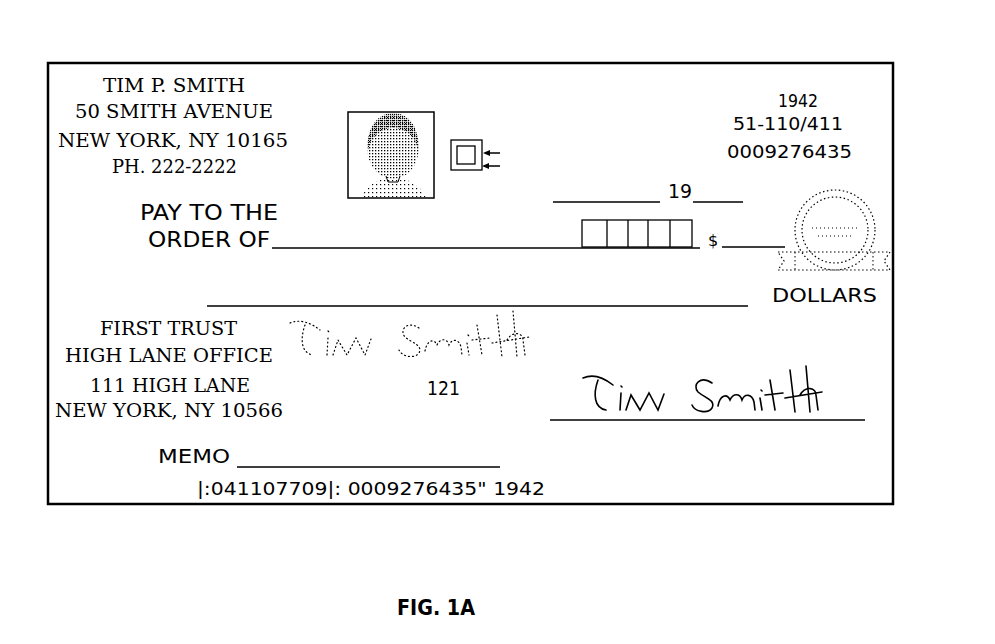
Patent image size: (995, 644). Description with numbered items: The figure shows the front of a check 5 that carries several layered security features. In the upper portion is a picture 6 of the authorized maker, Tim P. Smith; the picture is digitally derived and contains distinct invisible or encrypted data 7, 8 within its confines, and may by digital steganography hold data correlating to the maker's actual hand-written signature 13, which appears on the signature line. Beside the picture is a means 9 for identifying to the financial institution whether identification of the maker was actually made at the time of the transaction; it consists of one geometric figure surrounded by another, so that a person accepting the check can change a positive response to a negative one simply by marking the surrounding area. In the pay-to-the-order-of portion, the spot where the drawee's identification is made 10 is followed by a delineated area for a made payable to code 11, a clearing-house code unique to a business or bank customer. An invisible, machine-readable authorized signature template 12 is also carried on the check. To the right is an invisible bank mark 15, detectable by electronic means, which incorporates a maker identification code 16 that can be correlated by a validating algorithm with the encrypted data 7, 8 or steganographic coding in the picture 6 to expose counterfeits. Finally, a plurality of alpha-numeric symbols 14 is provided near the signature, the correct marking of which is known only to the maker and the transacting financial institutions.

The check 5 is at (204, 60).
The picture 6 is at (388, 108).
The distinct invisible or encrypted data 7 is at (357, 178).
The distinct invisible or encrypted data 8 is at (463, 130).
The means for identifying whether identification of the maker was made 9 is at (401, 112).
The spot where the drawee's identification is made 10 is at (473, 212).
The made payable to code 11 is at (620, 204).
The authorized signature template 12 is at (511, 308).
The hand-written signature 13 is at (805, 428).
The alpha-numeric symbols 14 is at (583, 452).
The bank mark 15 is at (845, 163).
The maker identification code 16 is at (817, 244).